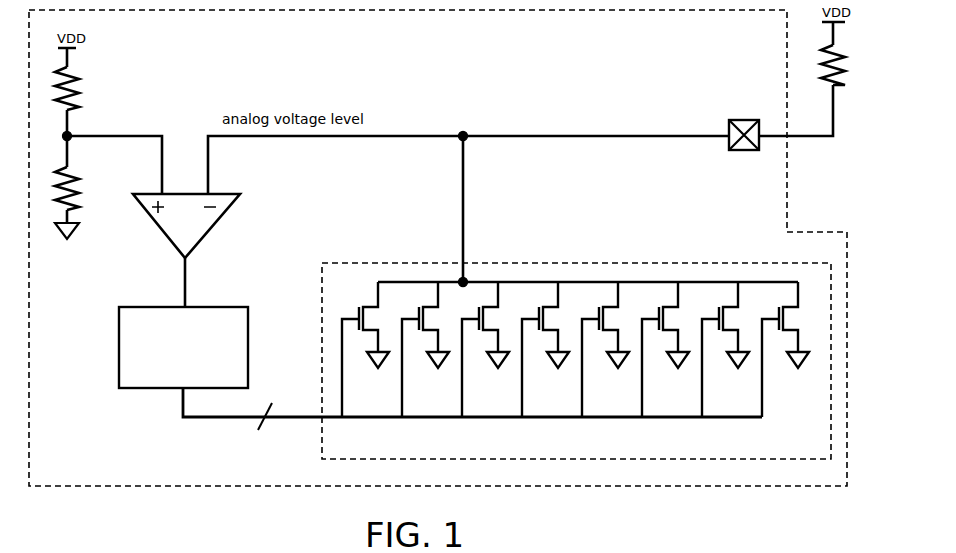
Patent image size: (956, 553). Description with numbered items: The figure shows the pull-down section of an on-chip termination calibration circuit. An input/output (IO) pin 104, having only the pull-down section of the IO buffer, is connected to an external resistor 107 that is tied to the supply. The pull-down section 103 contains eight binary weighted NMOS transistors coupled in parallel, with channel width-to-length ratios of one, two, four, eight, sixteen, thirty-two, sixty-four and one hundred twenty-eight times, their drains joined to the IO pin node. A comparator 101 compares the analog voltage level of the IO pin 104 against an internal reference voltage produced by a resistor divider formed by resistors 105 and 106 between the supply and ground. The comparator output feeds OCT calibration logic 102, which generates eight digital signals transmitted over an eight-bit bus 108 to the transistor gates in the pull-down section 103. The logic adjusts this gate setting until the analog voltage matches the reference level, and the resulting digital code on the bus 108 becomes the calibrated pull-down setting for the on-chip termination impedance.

The comparator 101 is at (220, 219).
The OCT calibration logic 102 is at (207, 307).
The pull-down section 103 is at (582, 262).
The input/output (IO) pin 104 is at (735, 120).
The resistor 105 is at (82, 80).
The resistor 106 is at (77, 192).
The external resistor 107 is at (845, 58).
The 8-bit bus 108 is at (219, 418).